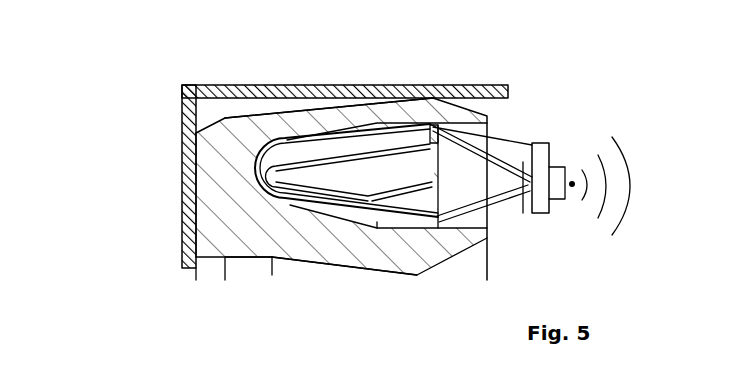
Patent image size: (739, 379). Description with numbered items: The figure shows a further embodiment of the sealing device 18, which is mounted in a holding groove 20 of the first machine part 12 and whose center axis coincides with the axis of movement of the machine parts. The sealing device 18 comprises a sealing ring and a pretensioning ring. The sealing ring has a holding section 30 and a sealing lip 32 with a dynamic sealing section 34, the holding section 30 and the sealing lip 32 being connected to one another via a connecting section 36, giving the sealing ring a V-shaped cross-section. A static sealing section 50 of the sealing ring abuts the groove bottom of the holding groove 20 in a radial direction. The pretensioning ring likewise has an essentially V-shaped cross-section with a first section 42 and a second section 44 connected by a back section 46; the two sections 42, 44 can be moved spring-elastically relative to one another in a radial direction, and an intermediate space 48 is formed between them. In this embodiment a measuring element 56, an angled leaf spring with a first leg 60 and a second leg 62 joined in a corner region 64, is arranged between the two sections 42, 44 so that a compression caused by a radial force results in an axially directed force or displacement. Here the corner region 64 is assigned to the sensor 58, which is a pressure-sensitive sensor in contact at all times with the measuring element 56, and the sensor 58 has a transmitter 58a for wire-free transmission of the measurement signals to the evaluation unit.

The first machine part 12 is at (182, 88).
The sealing device 18 is at (538, 74).
The holding groove 20 is at (233, 107).
The holding section 30 is at (293, 122).
The sealing lip 32 is at (325, 243).
The sealing section 34 is at (418, 275).
The connecting section 36 is at (205, 186).
The first section 42 is at (370, 143).
The second section 44 is at (298, 245).
The back section 46 is at (263, 180).
The intermediate space 48 is at (355, 183).
The static sealing section 50 is at (457, 105).
The measuring element 56 is at (492, 206).
The sensor 58 is at (546, 163).
The transmitter 58a is at (553, 187).
The first leg 60 is at (467, 157).
The second leg 62 is at (483, 193).
The corner region 64 is at (527, 200).